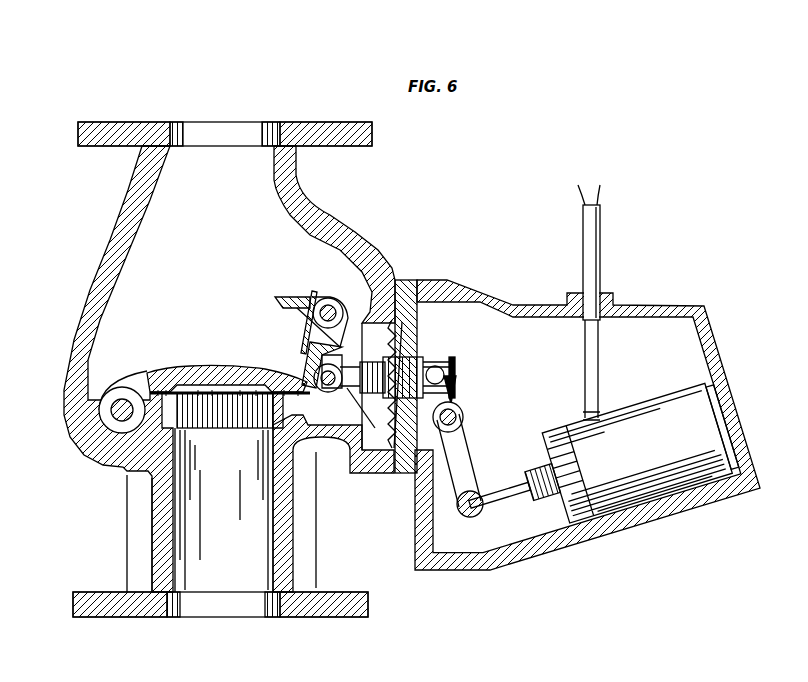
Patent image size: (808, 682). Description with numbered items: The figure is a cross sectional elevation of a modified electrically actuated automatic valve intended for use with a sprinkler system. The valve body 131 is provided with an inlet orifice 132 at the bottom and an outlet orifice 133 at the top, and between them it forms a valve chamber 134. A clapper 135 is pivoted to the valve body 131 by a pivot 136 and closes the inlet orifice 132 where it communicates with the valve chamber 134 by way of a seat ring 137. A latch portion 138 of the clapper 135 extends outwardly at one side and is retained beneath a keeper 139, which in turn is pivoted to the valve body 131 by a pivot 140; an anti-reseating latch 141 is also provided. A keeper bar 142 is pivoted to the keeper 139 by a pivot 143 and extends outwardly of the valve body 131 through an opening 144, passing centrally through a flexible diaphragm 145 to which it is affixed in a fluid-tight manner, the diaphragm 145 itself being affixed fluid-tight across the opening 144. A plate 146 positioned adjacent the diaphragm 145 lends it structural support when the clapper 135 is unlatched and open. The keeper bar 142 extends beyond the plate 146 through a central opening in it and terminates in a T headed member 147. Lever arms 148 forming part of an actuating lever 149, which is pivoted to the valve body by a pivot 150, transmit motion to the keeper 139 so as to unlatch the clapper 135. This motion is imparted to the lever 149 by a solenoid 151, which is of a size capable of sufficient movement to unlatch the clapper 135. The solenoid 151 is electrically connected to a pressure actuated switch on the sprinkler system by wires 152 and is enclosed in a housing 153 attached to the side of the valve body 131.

The valve body 131 is at (68, 310).
The inlet orifice 132 is at (215, 607).
The outlet orifice 133 is at (212, 136).
The valve chamber 134 is at (204, 273).
The clapper 135 is at (226, 361).
The pivot 136 is at (118, 402).
The seat ring 137 is at (224, 492).
The latch portion 138 is at (307, 393).
The keeper 139 is at (311, 361).
The pivot 140 is at (332, 309).
The anti-reseating latch 141 is at (293, 300).
The keeper bar 142 is at (347, 370).
The pivot 143 is at (374, 416).
The opening 144 is at (414, 292).
The flexible diaphragm 145 is at (395, 342).
The plate 146 is at (418, 332).
The T headed member 147 is at (452, 374).
The lever arms 148 is at (452, 401).
The actuating lever 149 is at (462, 455).
The pivot 150 is at (462, 418).
The solenoid 151 is at (598, 465).
The wires 152 is at (593, 390).
The housing 153 is at (736, 406).